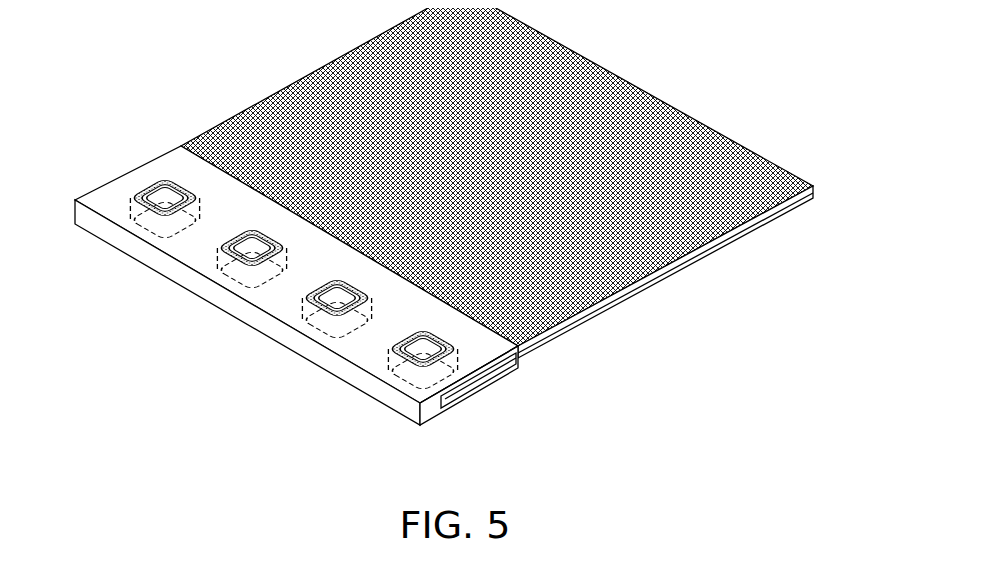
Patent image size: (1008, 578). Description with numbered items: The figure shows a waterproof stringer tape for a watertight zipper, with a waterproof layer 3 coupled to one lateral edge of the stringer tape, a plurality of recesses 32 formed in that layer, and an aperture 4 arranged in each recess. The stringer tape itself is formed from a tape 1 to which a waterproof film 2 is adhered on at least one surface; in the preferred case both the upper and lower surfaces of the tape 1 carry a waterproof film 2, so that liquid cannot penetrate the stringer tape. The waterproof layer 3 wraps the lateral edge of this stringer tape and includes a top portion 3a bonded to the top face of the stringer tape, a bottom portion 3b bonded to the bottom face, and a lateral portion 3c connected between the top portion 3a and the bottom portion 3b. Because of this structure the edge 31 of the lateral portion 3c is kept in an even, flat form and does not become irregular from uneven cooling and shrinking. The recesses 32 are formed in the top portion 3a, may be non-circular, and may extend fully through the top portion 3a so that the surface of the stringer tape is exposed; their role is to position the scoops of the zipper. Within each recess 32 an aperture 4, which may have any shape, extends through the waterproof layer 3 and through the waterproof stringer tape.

The tape 1 is at (516, 183).
The waterproof film 2 is at (737, 142).
The waterproof layer 3 is at (337, 276).
The top portion 3a is at (497, 350).
The bottom portion 3b is at (472, 382).
The lateral portion 3c is at (423, 400).
The edge of the lateral portion 31 is at (236, 306).
The recess 32 is at (128, 197).
The aperture 4 is at (260, 244).